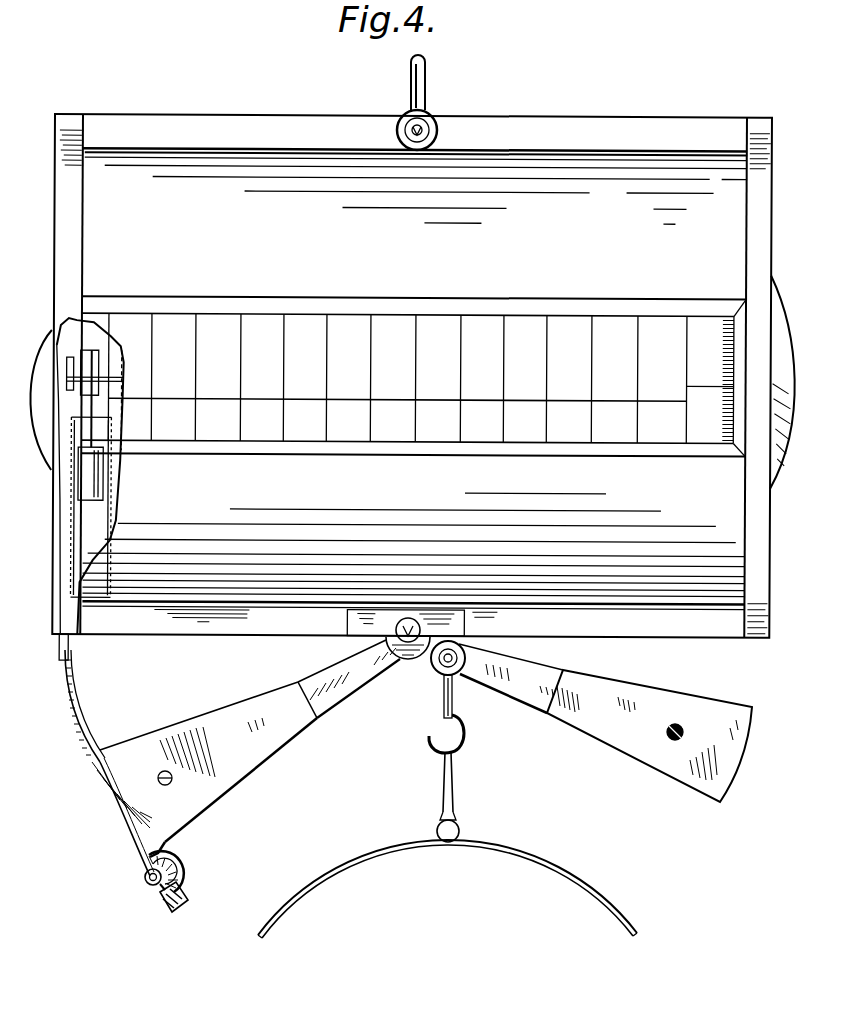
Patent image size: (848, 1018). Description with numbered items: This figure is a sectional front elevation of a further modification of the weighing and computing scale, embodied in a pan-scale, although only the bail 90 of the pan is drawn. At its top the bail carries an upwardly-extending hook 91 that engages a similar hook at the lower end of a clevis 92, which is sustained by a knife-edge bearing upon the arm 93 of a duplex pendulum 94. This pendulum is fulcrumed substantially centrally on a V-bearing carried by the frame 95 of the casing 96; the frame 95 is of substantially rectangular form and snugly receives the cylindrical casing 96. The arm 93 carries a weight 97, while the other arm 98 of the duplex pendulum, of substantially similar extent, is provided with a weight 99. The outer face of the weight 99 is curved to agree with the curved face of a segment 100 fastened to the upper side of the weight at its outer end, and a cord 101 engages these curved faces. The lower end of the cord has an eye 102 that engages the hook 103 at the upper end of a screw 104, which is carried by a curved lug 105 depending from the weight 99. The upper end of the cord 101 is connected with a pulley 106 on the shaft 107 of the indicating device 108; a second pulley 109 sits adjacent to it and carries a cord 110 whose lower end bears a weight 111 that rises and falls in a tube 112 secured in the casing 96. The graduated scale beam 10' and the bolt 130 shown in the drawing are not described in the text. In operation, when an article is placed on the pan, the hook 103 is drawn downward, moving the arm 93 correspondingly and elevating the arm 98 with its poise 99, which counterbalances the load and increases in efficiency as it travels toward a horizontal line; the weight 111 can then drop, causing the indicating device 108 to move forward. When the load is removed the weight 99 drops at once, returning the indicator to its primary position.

The graduated scale beam 10' is at (413, 364).
The bail 90 is at (447, 887).
The hook 91 is at (471, 744).
The clevis 92 is at (456, 675).
The arm 93 is at (511, 678).
The duplex pendulum 94 is at (408, 661).
The frame 95 is at (440, 623).
The casing 96 is at (413, 550).
The weight 97 is at (649, 736).
The arm 98 is at (349, 679).
The weight 99 is at (204, 762).
The segment 100 is at (82, 700).
The cord 101 is at (120, 842).
The eye 102 is at (147, 882).
The hook 103 is at (174, 873).
The screw 104 is at (185, 898).
The curved lug 105 is at (178, 848).
The pulley 106 is at (62, 345).
The shaft 107 is at (158, 343).
The indicating device 108 is at (118, 420).
The pulley 109 is at (92, 362).
The cord 110 is at (98, 400).
The weight 111 is at (110, 479).
The tube 112 is at (114, 520).
The bolt 130 is at (160, 358).